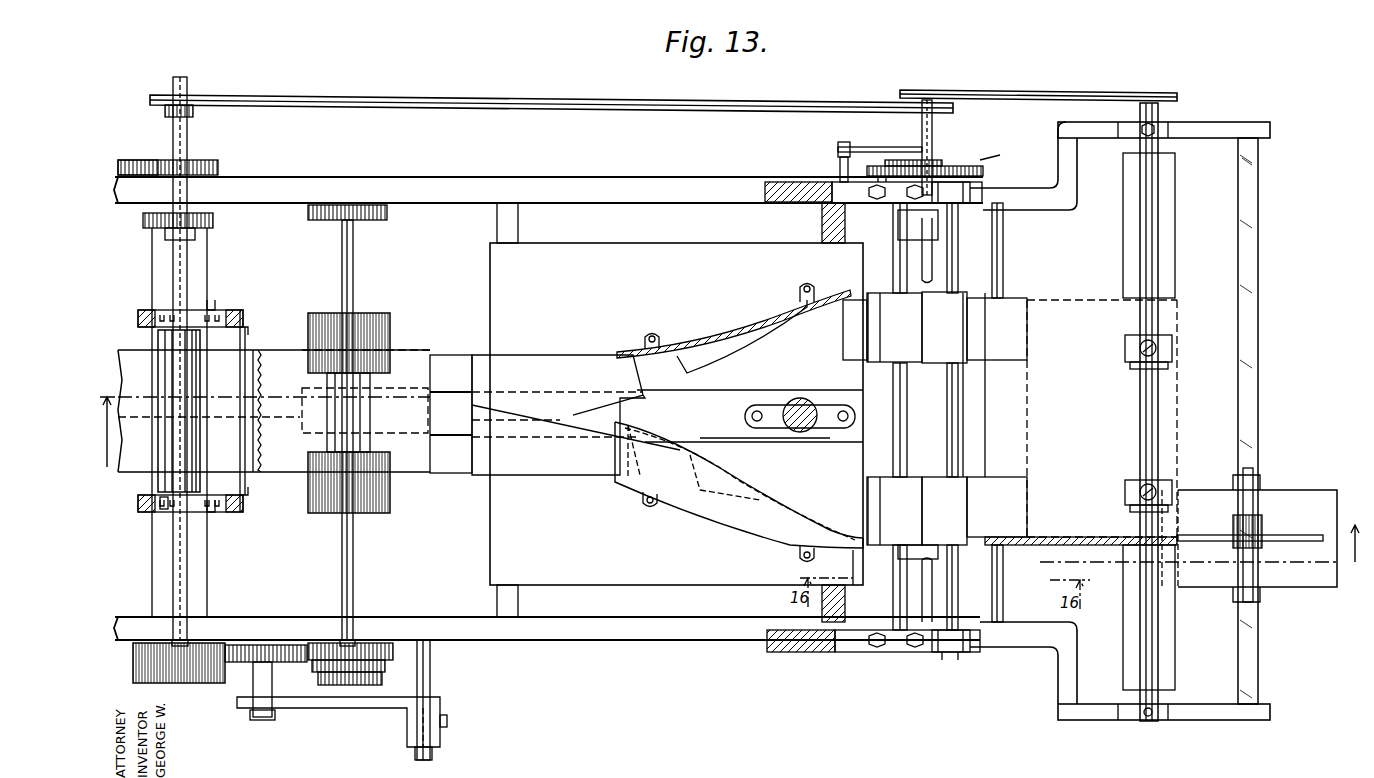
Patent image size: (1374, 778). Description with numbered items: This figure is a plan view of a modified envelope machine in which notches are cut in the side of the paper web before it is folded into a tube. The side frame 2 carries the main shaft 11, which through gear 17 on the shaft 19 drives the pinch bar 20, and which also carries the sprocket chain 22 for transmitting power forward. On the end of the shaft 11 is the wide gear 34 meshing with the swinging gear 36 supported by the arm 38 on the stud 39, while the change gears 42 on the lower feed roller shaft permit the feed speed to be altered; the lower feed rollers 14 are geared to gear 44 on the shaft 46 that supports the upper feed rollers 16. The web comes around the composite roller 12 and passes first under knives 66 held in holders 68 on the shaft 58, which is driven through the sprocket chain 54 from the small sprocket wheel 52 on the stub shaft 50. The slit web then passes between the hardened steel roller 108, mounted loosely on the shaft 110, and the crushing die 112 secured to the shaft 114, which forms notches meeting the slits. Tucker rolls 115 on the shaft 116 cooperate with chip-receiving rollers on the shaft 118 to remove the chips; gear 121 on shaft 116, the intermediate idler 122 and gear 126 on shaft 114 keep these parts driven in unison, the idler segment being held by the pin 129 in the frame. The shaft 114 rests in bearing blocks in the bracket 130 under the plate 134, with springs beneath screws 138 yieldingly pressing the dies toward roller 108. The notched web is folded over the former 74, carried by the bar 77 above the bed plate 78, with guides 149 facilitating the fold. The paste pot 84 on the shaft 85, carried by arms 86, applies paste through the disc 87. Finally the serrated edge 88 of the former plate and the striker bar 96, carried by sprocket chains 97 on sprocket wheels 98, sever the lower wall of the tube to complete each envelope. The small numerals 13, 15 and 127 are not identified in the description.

The side frame 2 is at (630, 177).
The shaft 11 is at (189, 131).
The composite roller 12 is at (1176, 230).
The gear 13 is at (210, 160).
The lower paper feed rollers 14 is at (731, 490).
The gear 15 is at (122, 160).
The upper feed rollers 16 is at (390, 325).
The gear 17 is at (214, 220).
The shaft 19 is at (172, 280).
The pinch bar 20 is at (158, 364).
The sprocket chain 22 is at (302, 99).
The wide gear 34 is at (133, 666).
The swinging gear 36 is at (280, 662).
The arm 38 is at (335, 710).
The stud 39 is at (430, 687).
The change gears 42 is at (385, 668).
The gear 44 is at (382, 222).
The shaft 46 is at (354, 277).
The stub shaft 50 is at (922, 120).
The small sprocket wheel 52 is at (926, 98).
The sprocket chain 54 is at (995, 90).
The shaft 58 is at (1160, 112).
The knives 66 is at (1130, 368).
The holders 68 is at (1125, 342).
The former 74 is at (448, 352).
The bar 77 is at (795, 432).
The bed plate 78 is at (676, 412).
The paste pot 84 is at (1312, 490).
The shaft 85 is at (1258, 264).
The arms 86 is at (1244, 120).
The disc 87 is at (1310, 537).
The serrated edge 88 is at (258, 475).
The striker bar 96 is at (246, 340).
The sprocket chains 97 is at (138, 320).
The sprocket wheels 98 is at (160, 512).
The hardened steel roller 108 is at (1020, 292).
The shaft 110 is at (1003, 250).
The crushing die 112 is at (944, 418).
The shaft 114 is at (958, 182).
The tucker rolls 115 is at (882, 419).
The shaft 116 is at (893, 265).
The shaft 118 is at (938, 232).
The gear 121 is at (870, 160).
The intermediate idler 122 is at (938, 162).
The gear 126 is at (838, 150).
The bar 127 is at (888, 152).
The pin 129 is at (840, 165).
The bracket 130 is at (972, 196).
The plate 134 is at (935, 162).
The screws 138 is at (912, 650).
The guides 149 is at (710, 340).